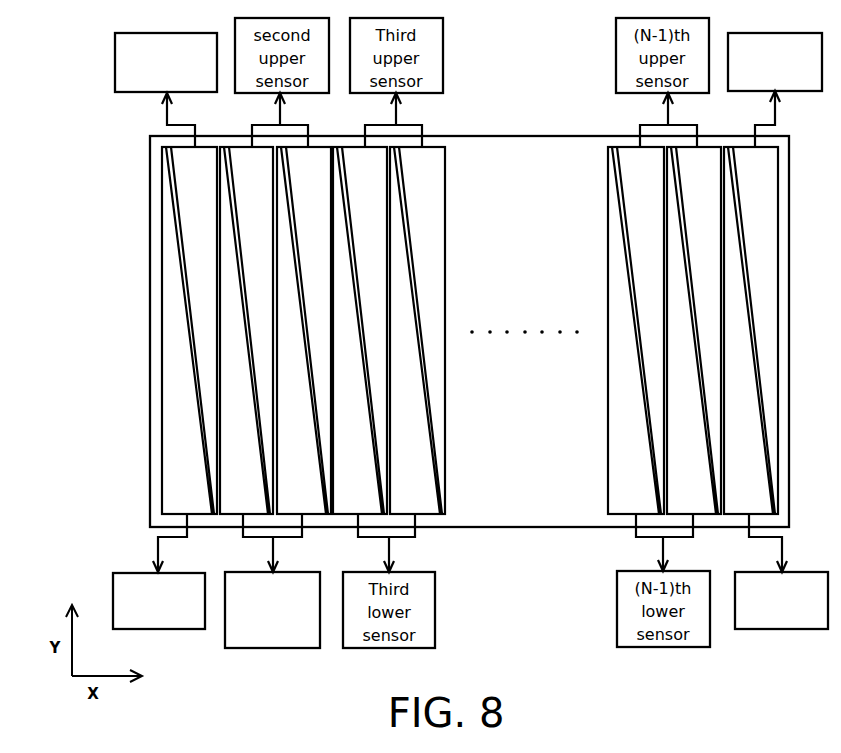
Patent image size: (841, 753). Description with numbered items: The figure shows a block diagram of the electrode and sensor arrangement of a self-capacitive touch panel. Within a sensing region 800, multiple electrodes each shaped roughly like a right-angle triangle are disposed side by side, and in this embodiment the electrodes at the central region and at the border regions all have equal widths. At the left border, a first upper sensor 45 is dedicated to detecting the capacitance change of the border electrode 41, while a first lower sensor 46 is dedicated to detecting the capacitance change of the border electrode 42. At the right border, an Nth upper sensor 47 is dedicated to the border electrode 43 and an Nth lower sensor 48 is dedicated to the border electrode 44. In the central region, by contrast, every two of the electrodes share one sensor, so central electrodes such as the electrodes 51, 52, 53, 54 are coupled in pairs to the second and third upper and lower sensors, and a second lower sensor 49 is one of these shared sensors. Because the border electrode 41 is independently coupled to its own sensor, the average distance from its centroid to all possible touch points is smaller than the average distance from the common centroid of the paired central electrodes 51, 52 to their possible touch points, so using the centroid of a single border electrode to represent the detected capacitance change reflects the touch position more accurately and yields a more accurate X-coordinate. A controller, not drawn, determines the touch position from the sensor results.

The sensing region 800 is at (790, 330).
The border electrode 41 is at (202, 152).
The border electrode 42 is at (175, 400).
The border electrode 43 is at (768, 212).
The border electrode 44 is at (735, 514).
The first upper sensor 45 is at (175, 33).
The first lower sensor 46 is at (113, 573).
The Nth upper sensor 47 is at (782, 33).
The Nth lower sensor 48 is at (780, 629).
The second lower sensor 49 is at (278, 648).
The central electrode 51 is at (238, 152).
The central electrode 52 is at (318, 152).
The central electrode 53 is at (233, 514).
The central electrode 54 is at (313, 514).